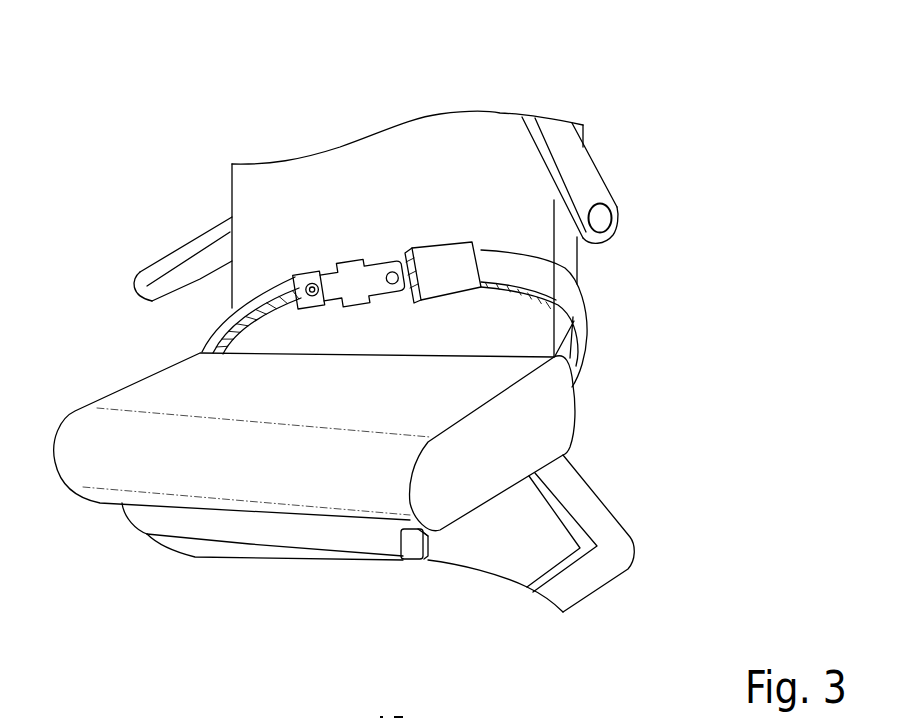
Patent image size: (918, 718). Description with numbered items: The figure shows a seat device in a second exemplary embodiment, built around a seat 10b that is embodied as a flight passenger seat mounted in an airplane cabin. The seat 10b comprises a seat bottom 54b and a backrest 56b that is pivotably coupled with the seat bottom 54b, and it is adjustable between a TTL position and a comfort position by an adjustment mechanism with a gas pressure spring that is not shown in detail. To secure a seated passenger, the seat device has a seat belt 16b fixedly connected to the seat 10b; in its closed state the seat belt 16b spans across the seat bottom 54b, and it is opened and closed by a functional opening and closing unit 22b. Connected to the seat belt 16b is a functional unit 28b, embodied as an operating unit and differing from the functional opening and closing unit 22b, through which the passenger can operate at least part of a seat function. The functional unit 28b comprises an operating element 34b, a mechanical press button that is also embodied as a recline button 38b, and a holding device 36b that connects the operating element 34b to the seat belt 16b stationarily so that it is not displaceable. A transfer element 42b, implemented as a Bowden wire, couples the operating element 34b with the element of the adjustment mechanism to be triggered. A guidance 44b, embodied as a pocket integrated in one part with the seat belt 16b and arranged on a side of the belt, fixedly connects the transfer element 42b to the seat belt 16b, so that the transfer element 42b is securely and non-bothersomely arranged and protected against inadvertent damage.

The seat 10b is at (377, 120).
The seat belt 16b is at (599, 329).
The functional opening and closing unit 22b is at (382, 227).
The functional unit 28b is at (286, 256).
The operating element 34b is at (313, 299).
The holding device 36b is at (326, 325).
The recline button 38b is at (310, 262).
The transfer element 42b is at (293, 283).
The guidance 44b is at (232, 313).
The seat bottom 54b is at (483, 380).
The backrest 56b is at (487, 178).